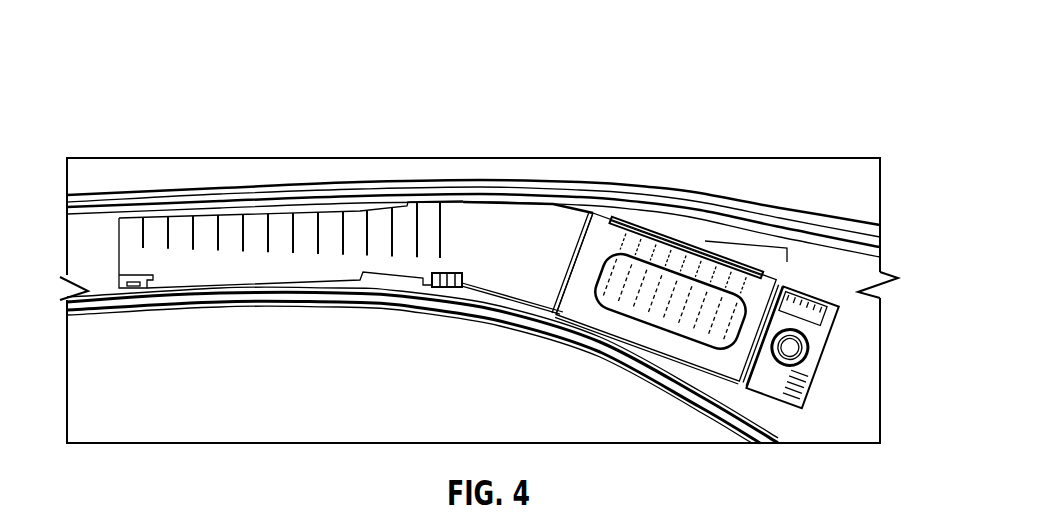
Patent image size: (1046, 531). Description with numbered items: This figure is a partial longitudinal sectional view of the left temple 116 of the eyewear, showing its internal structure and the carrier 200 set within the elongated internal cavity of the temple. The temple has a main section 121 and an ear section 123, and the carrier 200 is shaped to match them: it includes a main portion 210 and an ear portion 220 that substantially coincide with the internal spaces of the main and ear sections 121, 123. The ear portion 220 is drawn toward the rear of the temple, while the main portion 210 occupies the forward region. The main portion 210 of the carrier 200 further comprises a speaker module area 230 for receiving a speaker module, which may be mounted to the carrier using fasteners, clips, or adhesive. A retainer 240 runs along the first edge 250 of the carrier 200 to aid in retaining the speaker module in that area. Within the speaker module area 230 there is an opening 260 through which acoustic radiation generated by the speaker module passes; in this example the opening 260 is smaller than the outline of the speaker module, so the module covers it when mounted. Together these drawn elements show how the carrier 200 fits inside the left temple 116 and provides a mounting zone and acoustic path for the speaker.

The left temple 116 is at (488, 88).
The main section 121 is at (683, 192).
The ear section 123 is at (262, 186).
The carrier 200 is at (506, 273).
The main portion 210 is at (553, 228).
The ear portion 220 is at (346, 228).
The speaker module area 230 is at (590, 312).
The retainer 240 is at (712, 250).
The first edge 250 is at (787, 288).
The opening 260 is at (668, 343).